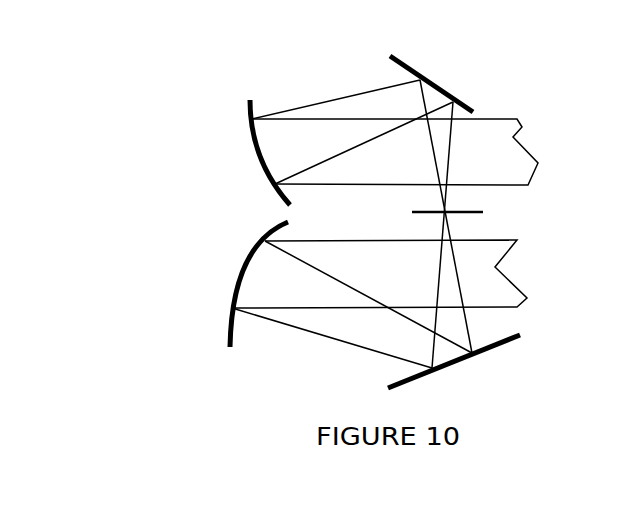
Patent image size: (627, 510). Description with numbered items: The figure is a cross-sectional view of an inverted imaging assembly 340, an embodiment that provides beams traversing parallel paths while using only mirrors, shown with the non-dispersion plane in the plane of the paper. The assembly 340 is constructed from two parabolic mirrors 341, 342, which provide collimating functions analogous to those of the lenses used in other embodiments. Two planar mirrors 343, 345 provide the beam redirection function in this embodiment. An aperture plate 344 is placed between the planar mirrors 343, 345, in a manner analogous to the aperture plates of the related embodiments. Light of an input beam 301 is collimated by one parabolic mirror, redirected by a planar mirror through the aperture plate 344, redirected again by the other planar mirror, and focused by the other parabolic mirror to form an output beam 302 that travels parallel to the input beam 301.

The inverted imaging assembly 340 is at (122, 128).
The parabolic mirror 341 is at (252, 146).
The parabolic mirror 342 is at (252, 253).
The planar mirror 343 is at (437, 88).
The aperture plate 344 is at (484, 211).
The planar mirror 345 is at (498, 340).
The input beam 301 is at (511, 296).
The output beam 302 is at (511, 120).